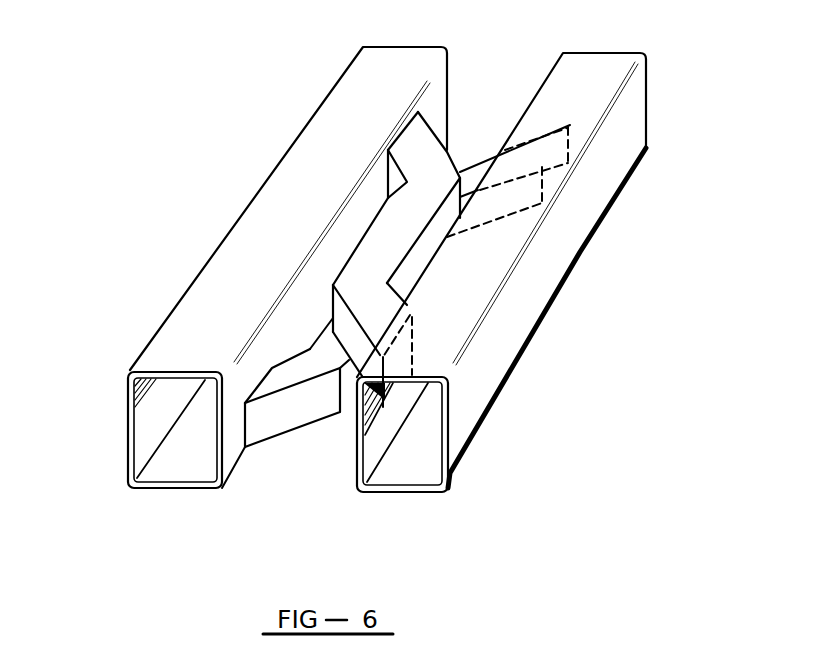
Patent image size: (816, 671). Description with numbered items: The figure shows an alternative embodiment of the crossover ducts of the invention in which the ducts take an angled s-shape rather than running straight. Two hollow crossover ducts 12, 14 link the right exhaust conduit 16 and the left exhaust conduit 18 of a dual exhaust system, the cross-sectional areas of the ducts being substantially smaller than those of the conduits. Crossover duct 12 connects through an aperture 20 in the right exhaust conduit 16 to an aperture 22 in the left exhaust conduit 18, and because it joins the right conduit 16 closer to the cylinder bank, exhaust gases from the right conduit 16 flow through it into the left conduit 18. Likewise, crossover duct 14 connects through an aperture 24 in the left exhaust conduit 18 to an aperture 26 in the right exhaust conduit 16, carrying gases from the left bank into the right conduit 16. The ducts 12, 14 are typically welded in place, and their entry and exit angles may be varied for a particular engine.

The crossover duct 12 is at (273, 387).
The crossover duct 14 is at (425, 145).
The right exhaust conduit 16 is at (275, 222).
The left exhaust conduit 18 is at (548, 260).
The aperture 20 is at (263, 368).
The aperture 22 is at (556, 168).
The aperture 24 is at (400, 357).
The aperture 26 is at (392, 147).